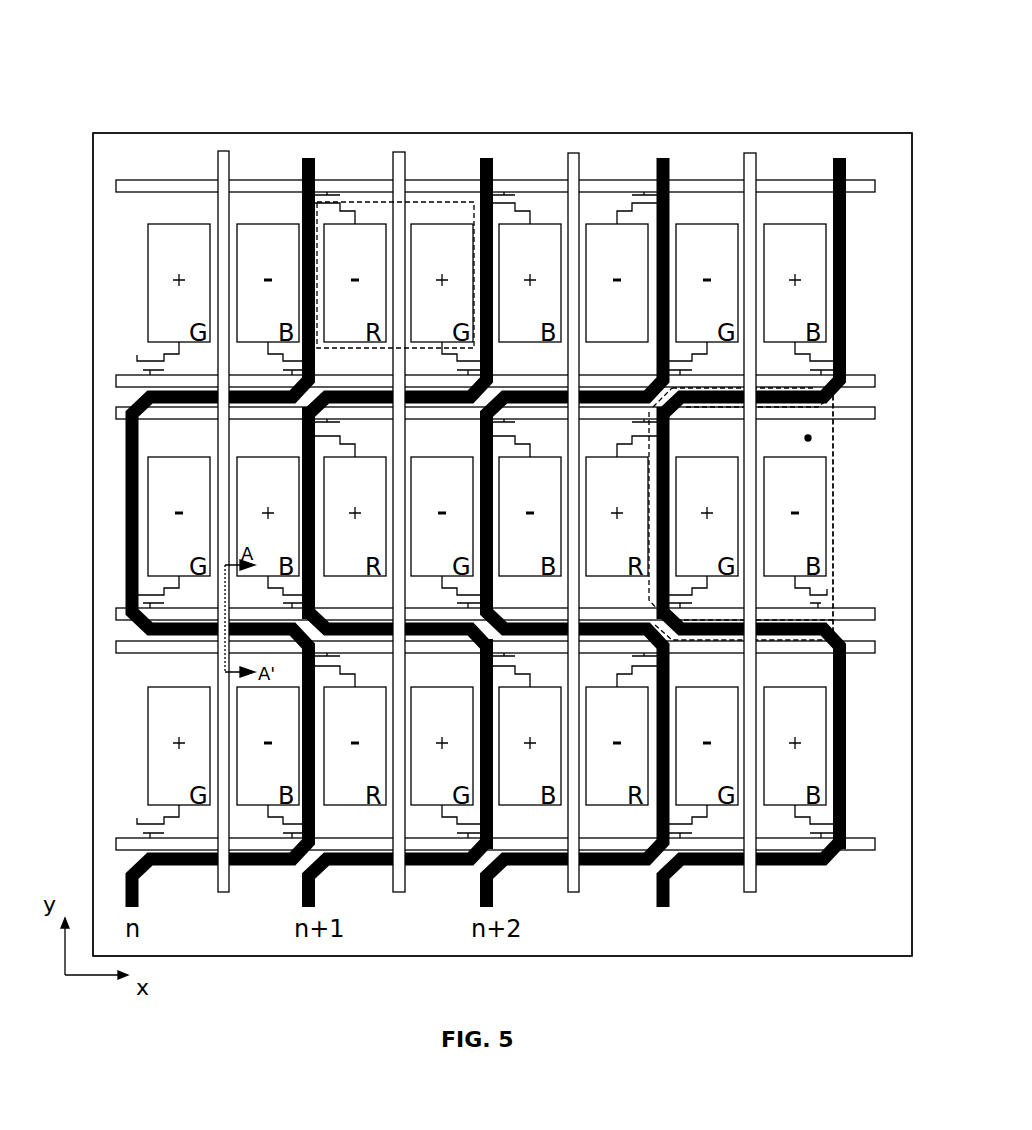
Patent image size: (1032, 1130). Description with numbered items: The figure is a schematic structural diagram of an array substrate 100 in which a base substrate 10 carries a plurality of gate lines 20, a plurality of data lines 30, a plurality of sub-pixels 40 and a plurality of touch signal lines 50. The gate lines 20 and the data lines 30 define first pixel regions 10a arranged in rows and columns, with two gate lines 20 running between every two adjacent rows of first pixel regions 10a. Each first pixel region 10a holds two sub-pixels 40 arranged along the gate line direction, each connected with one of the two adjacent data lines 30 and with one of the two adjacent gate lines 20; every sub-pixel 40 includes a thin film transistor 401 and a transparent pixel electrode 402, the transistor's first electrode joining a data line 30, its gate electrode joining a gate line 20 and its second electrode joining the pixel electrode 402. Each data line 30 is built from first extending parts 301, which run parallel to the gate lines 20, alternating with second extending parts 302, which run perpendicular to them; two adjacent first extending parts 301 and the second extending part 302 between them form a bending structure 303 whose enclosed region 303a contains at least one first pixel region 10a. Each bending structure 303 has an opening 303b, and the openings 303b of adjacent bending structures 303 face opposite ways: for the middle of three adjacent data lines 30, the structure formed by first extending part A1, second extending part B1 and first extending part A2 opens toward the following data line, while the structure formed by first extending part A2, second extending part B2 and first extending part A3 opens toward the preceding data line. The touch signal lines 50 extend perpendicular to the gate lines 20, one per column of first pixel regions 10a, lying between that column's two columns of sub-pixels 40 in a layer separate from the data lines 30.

The array substrate 100 is at (77, 28).
The base substrate 10 is at (137, 146).
The gate line 20 is at (268, 174).
The data line 30 is at (517, 498).
The first pixel region 10a is at (433, 202).
The touch signal line 50 is at (563, 160).
The sub-pixel 40 is at (643, 194).
The thin film transistor 401 is at (603, 238).
The pixel electrode 402 is at (651, 200).
The first extending part A1 is at (418, 402).
The second extending part B1 is at (317, 460).
The first extending part A2 is at (350, 625).
The second extending part B2 is at (478, 688).
The first extending part A3 is at (415, 867).
The first extending part 301 is at (797, 865).
The second extending part 302 is at (897, 780).
The bending structure 303 is at (730, 452).
The region enclosed by the bending structure 303a is at (808, 438).
The opening 303b is at (905, 588).